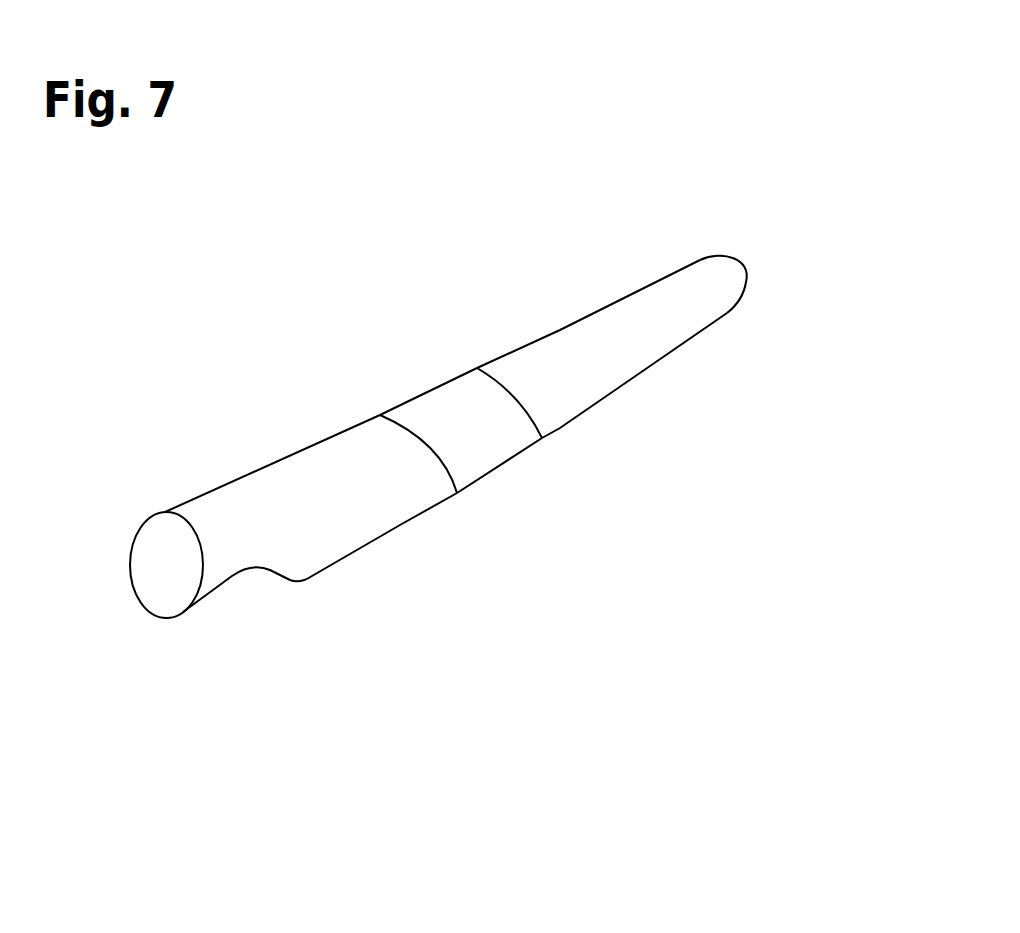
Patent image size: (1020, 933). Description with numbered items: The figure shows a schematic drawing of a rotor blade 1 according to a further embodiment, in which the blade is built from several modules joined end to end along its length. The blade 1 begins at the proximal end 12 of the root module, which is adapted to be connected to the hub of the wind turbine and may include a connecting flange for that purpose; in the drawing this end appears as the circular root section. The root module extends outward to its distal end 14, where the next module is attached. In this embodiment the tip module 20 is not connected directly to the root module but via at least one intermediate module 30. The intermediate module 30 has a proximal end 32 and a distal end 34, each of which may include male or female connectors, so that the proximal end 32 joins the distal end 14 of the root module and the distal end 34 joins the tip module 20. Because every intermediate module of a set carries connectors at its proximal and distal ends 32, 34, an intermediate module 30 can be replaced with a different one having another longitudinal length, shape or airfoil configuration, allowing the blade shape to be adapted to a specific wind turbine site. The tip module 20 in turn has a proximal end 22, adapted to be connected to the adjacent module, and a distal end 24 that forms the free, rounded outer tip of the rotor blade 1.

The rotor blade 1 is at (514, 515).
The proximal end of the root module 12 is at (175, 644).
The distal end of the root module 14 is at (463, 519).
The tip module 20 is at (687, 347).
The proximal end of the tip module 22 is at (469, 354).
The distal end of the tip module 24 is at (771, 281).
The intermediate module 30 is at (503, 427).
The proximal end of the intermediate module 32 is at (481, 499).
The distal end of the intermediate module 34 is at (437, 366).